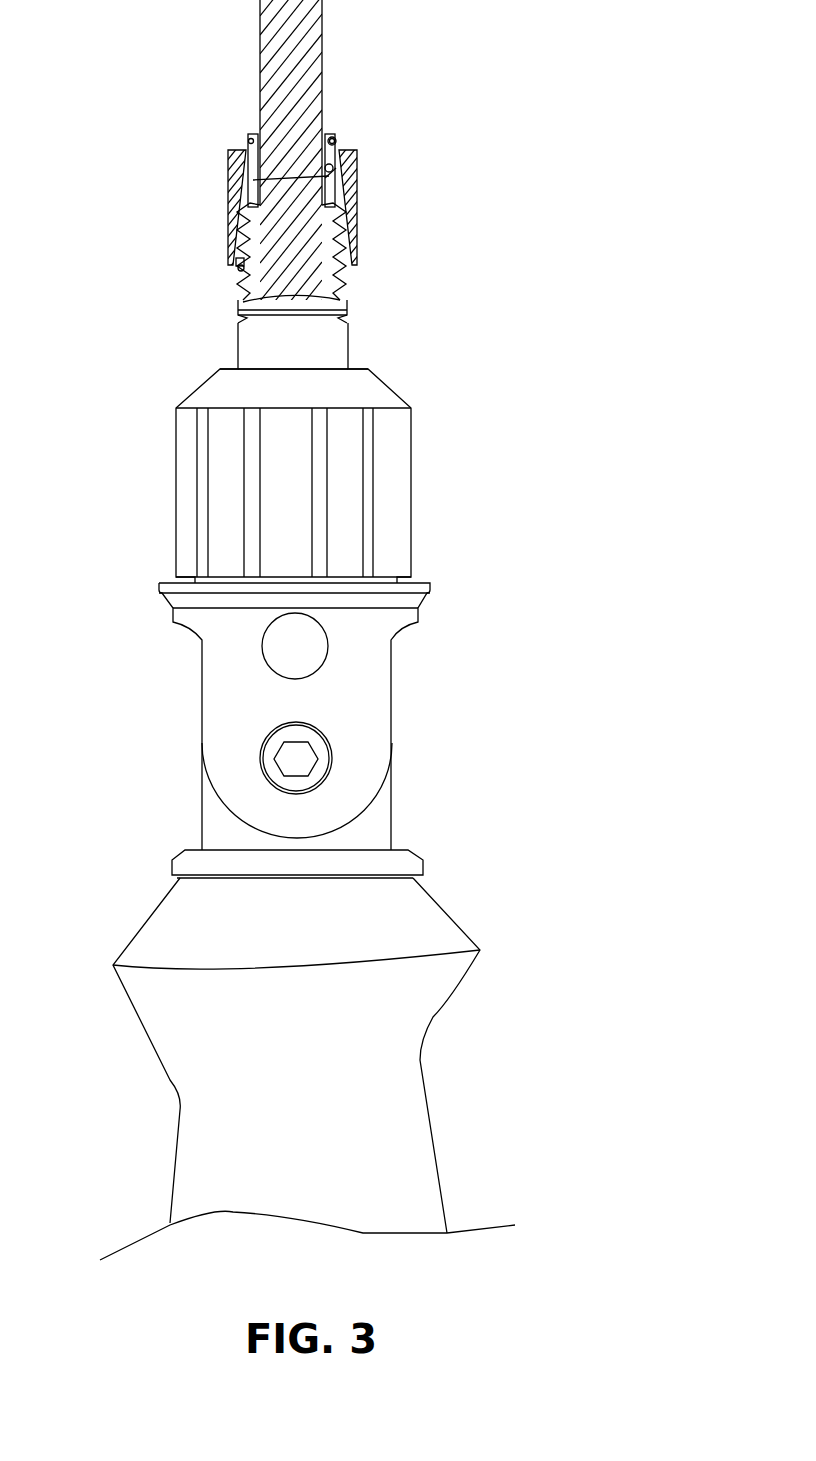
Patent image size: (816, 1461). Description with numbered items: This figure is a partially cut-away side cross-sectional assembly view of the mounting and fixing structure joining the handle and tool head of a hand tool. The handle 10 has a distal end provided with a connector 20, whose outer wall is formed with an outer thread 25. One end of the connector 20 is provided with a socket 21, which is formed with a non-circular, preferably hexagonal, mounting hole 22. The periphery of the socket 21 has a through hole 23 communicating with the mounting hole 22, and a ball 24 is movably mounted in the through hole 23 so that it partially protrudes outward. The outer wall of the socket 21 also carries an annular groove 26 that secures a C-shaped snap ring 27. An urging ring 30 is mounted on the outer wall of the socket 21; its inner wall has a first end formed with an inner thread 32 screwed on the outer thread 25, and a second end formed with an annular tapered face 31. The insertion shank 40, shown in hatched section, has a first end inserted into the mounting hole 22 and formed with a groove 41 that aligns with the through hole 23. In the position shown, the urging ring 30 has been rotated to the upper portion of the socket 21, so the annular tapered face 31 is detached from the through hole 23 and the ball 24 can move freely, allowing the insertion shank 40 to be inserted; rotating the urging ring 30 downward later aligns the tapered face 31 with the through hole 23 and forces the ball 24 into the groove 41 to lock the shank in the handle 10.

The handle 10 is at (203, 1033).
The connector 20 is at (267, 338).
The socket 21 is at (228, 157).
The mounting hole 22 is at (248, 145).
The through hole 23 is at (355, 160).
The ball 24 is at (333, 170).
The outer thread 25 is at (238, 263).
The annular groove 26 is at (333, 138).
The C-shaped snap ring 27 is at (336, 140).
The urging ring 30 is at (355, 245).
The annular tapered face 31 is at (333, 173).
The inner thread 32 is at (240, 268).
The insertion shank 40 is at (283, 55).
The groove 41 is at (325, 177).